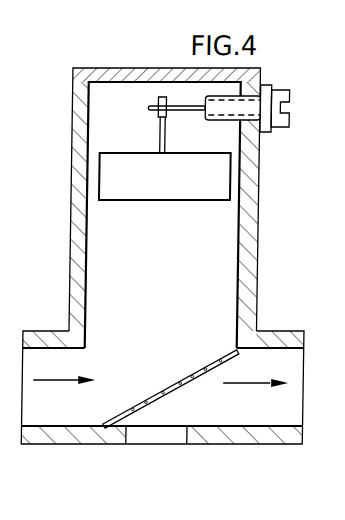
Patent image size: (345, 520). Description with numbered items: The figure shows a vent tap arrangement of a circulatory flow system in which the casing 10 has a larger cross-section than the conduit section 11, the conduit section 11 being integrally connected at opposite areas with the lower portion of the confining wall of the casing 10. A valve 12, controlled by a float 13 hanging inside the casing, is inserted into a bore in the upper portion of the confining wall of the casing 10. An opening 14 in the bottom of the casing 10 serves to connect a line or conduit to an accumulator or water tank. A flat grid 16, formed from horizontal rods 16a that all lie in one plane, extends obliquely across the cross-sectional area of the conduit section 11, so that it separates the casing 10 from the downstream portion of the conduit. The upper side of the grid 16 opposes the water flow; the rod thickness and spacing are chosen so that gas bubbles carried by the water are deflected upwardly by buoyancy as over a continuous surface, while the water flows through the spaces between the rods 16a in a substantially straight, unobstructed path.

The casing 10 is at (255, 213).
The conduit section 11 is at (288, 337).
The valve 12 is at (227, 112).
The float 13 is at (174, 183).
The opening 14 is at (144, 427).
The grid 16 is at (213, 356).
The horizontal rods 16a is at (187, 381).